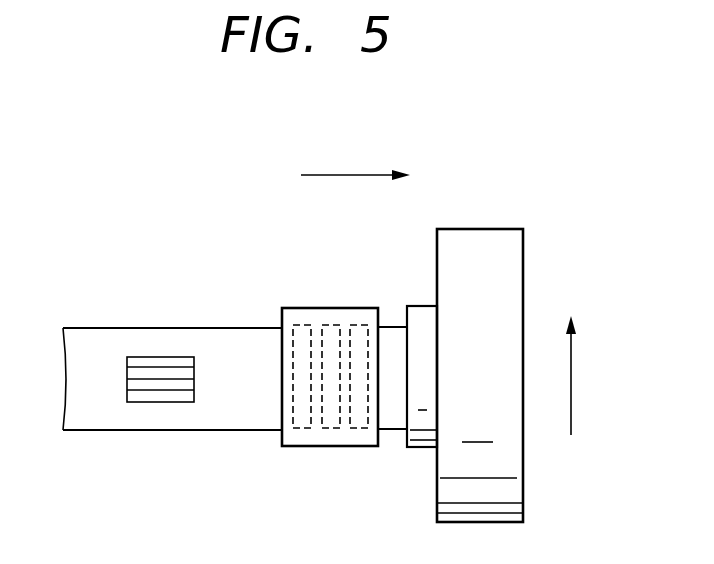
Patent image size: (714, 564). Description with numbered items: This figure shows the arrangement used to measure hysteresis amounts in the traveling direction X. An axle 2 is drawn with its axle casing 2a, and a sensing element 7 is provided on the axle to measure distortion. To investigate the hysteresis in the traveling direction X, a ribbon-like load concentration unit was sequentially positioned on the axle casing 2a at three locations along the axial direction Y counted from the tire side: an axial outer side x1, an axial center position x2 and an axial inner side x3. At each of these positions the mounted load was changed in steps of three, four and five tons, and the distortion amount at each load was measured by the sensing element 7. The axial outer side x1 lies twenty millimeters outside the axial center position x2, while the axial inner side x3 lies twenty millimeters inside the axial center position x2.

The axle 2 is at (215, 328).
The axle casing 2a is at (330, 308).
The sensing element 7 is at (136, 402).
The axial outer side x1 is at (360, 428).
The axial center position x2 is at (330, 428).
The axial inner side x3 is at (297, 428).
The traveling direction X is at (571, 376).
The axial direction Y is at (347, 175).